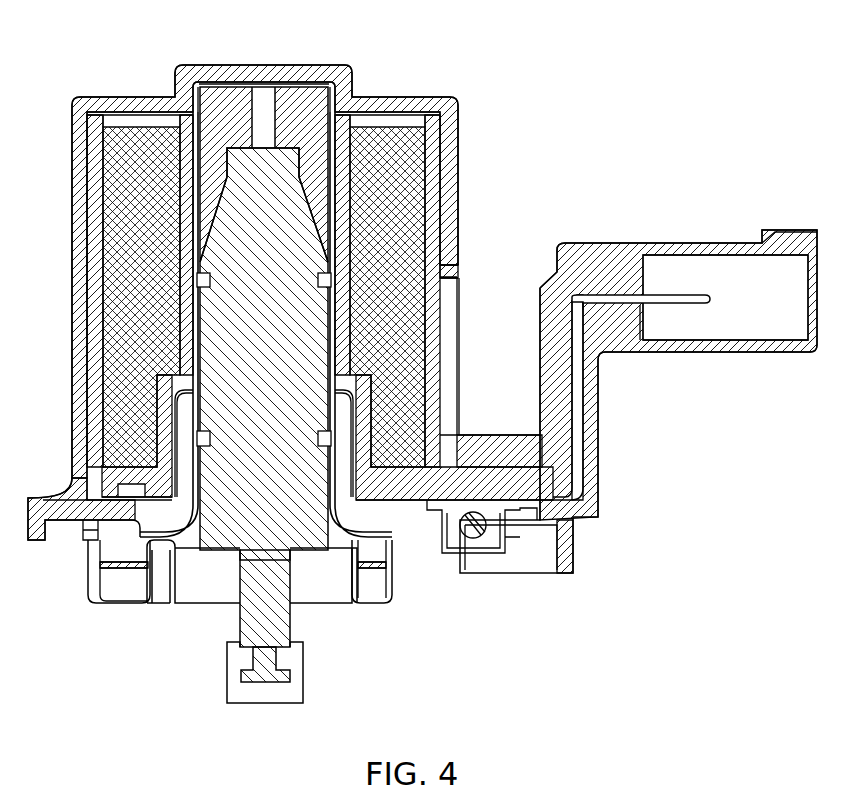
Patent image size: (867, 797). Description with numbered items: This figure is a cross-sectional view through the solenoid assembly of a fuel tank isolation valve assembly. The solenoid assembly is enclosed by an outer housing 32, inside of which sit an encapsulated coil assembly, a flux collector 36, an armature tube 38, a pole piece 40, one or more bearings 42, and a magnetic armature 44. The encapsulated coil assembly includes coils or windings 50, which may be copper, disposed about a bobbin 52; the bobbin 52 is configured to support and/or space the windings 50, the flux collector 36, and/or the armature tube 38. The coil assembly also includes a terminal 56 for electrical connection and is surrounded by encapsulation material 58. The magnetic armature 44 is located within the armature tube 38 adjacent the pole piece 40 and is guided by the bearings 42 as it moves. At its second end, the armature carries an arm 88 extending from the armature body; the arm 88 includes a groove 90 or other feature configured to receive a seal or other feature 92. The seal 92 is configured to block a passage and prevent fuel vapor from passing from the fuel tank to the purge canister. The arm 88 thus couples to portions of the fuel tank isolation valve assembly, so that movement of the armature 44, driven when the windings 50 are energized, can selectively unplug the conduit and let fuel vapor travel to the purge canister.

The outer housing 32 is at (75, 155).
The flux collector 36 is at (78, 523).
The armature tube 38 is at (323, 78).
The pole piece 40 is at (228, 92).
The bearings 42 is at (331, 279).
The magnetic armature 44 is at (345, 345).
The windings 50 is at (113, 407).
The bobbin 52 is at (163, 437).
The terminal 56 is at (672, 297).
The encapsulation material 58 is at (95, 365).
The arm 88 is at (238, 622).
The groove 90 is at (290, 657).
The seal 92 is at (223, 680).